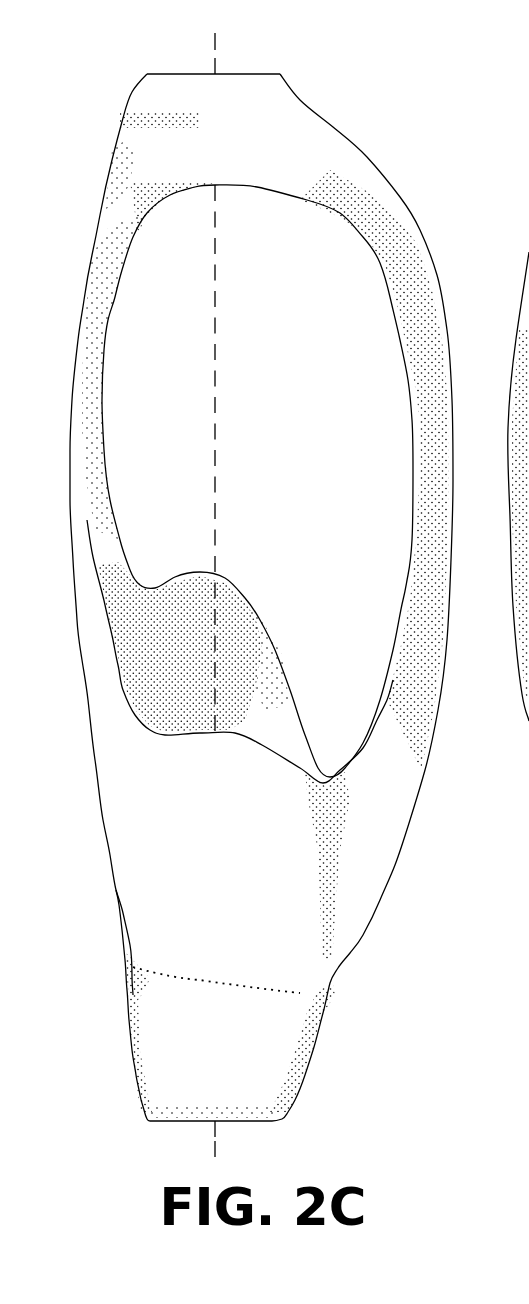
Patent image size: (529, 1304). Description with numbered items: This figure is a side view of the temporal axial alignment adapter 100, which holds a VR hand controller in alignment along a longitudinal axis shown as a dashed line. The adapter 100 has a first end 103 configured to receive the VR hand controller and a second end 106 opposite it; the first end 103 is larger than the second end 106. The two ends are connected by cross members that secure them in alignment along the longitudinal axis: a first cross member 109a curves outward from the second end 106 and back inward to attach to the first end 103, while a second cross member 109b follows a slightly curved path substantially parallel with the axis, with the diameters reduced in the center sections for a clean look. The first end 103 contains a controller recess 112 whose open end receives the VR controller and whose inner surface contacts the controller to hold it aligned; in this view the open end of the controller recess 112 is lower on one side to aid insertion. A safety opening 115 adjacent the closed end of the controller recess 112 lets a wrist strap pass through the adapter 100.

The temporal axial alignment adapter 100 is at (316, 55).
The first end 103 is at (410, 948).
The second end 106 is at (352, 99).
The first cross member 109a is at (413, 543).
The second cross member 109b is at (88, 236).
The controller recess 112 is at (255, 681).
The safety opening 115 is at (114, 942).